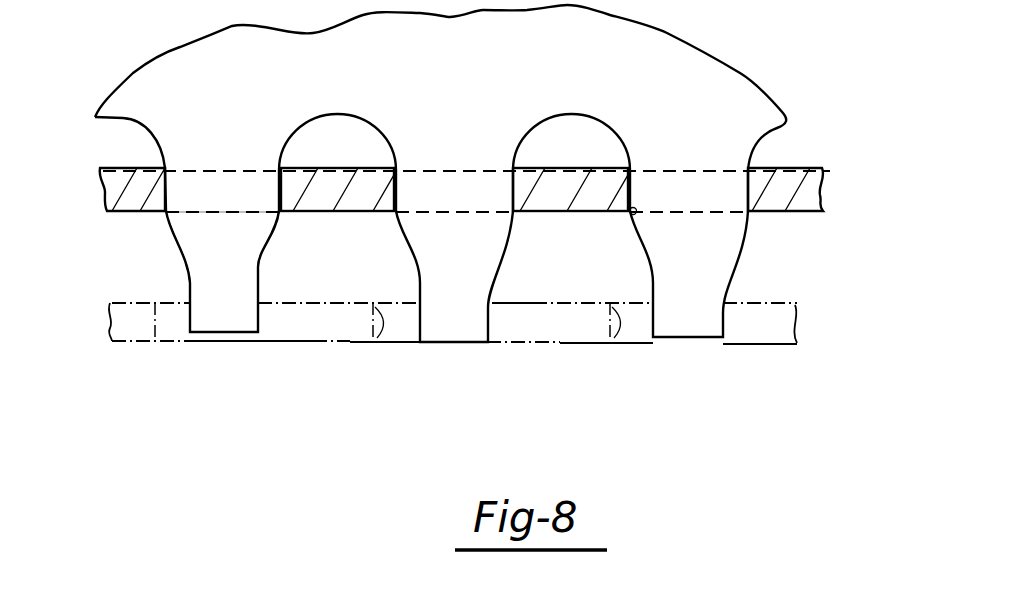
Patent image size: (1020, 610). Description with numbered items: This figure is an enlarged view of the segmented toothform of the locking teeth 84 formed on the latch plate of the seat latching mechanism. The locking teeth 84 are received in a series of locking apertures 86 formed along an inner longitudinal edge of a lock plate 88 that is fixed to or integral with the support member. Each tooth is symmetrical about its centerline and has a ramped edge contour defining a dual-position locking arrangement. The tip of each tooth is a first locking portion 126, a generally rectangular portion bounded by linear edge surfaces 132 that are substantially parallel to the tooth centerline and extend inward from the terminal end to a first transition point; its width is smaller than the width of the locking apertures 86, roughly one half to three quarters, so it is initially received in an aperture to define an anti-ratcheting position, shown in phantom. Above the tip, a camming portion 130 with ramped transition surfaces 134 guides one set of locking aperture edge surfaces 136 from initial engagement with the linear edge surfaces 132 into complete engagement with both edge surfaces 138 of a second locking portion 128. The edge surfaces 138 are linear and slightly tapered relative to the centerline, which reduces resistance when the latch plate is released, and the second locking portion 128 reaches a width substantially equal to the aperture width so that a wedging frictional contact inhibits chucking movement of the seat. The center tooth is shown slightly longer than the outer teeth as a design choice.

The locking teeth 84 is at (223, 254).
The locking apertures 86 is at (690, 205).
The lock plate 88 is at (792, 176).
The first locking portion 126 is at (196, 314).
The second locking portion 128 is at (231, 188).
The camming portion 130 is at (172, 254).
The linear edge surfaces 132 is at (419, 323).
The ramped transition surfaces 134 is at (273, 247).
The locking aperture edge surfaces 136 is at (165, 212).
The edge surfaces 138 is at (163, 195).